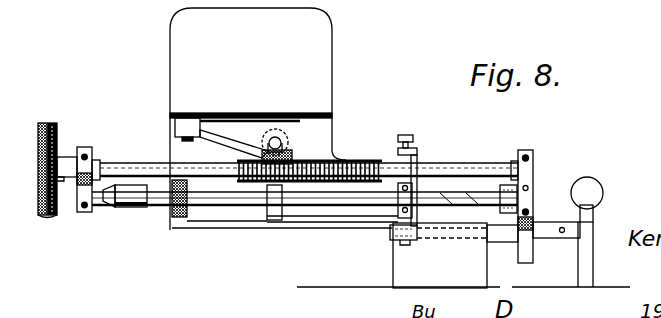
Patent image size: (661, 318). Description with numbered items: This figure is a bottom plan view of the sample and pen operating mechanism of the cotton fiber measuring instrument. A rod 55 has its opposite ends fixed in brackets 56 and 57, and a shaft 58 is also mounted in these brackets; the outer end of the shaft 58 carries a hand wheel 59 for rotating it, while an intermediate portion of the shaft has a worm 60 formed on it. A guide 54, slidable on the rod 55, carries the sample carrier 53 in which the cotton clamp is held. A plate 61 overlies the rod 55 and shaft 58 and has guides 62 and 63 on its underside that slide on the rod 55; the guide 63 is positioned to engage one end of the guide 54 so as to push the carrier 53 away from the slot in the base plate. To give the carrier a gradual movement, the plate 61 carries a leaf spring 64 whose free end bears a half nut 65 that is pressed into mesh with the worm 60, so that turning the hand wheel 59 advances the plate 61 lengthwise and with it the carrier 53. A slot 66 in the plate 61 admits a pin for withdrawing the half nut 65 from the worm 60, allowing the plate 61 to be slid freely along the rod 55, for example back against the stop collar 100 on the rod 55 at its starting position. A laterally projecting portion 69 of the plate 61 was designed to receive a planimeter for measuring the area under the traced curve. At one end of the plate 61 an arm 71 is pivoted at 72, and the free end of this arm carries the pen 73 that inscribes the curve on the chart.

The carrier 53 is at (405, 266).
The guide 54 is at (317, 223).
The rod 55 is at (223, 196).
The bracket 56 is at (84, 209).
The bracket 57 is at (535, 172).
The shaft 58 is at (457, 172).
The hand wheel 59 is at (53, 127).
The worm 60 is at (332, 158).
The plate 61 is at (200, 228).
The guide 62 is at (175, 216).
The guide 63 is at (402, 212).
The leaf spring 64 is at (216, 134).
The half nut 65 is at (290, 148).
The slot 66 is at (278, 132).
The laterally projecting portion 69 is at (184, 75).
The arm 71 is at (502, 231).
The pivot 72 is at (410, 143).
The pen 73 is at (589, 252).
The stop collar 100 is at (128, 208).